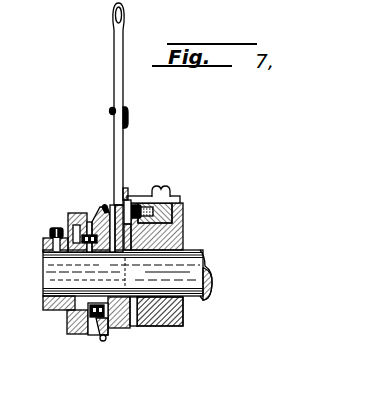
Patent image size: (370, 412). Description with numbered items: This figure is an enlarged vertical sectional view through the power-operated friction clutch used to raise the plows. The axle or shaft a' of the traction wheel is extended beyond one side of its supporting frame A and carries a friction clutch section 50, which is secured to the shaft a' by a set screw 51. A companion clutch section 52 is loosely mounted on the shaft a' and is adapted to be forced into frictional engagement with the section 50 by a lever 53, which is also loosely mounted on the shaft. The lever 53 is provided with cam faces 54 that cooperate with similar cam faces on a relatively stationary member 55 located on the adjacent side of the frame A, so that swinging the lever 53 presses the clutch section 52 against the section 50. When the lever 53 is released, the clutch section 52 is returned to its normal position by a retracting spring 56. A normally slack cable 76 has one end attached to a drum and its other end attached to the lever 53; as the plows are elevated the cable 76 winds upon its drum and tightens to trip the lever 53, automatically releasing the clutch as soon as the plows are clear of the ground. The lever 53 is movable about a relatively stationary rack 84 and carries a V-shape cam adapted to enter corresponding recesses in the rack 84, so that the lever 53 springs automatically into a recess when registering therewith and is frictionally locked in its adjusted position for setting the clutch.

The lever 53 is at (117, 132).
The cable 76 is at (110, 111).
The rack 84 is at (128, 190).
The companion clutch section 52 is at (103, 212).
The supporting frame A is at (183, 207).
The axle or shaft a' is at (140, 275).
The set screw 51 is at (53, 229).
The retracting spring 56 is at (65, 322).
The friction clutch section 50 is at (76, 333).
The cam faces 54 is at (126, 328).
The relatively stationary member 55 is at (136, 326).